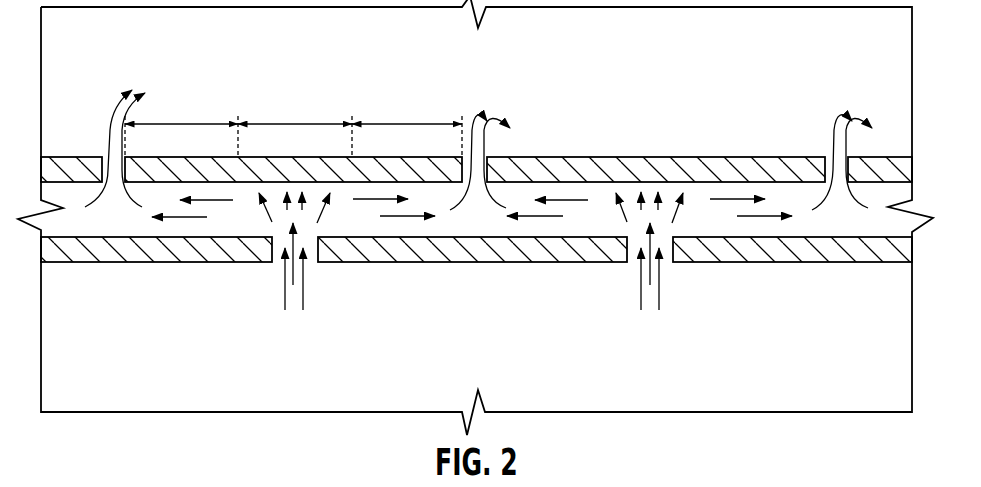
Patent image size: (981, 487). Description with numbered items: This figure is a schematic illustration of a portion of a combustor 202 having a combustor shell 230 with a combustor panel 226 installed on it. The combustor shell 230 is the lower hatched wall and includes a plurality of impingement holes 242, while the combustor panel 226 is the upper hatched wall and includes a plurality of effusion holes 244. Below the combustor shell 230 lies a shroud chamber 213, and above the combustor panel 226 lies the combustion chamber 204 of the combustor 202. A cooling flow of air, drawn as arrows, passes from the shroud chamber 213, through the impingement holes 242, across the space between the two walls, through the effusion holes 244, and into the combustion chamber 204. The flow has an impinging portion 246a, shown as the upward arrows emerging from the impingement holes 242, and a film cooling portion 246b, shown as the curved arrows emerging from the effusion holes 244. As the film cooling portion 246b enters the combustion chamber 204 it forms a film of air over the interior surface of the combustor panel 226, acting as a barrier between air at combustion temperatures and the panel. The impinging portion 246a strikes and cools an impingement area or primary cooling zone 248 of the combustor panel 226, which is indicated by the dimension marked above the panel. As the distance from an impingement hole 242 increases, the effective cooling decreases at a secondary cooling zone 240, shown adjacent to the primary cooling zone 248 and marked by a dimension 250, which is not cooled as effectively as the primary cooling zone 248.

The combustor 202 is at (638, 96).
The combustion chamber 204 is at (497, 64).
The shroud chamber 213 is at (498, 377).
The combustor panel 226 is at (395, 157).
The combustor shell 230 is at (168, 252).
The secondary cooling zone 240 is at (102, 156).
The impingement holes 242 is at (318, 265).
The effusion holes 244 is at (830, 155).
The impinging portion 246a is at (325, 345).
The film cooling portion 246b is at (173, 84).
The primary cooling zone 248 is at (293, 124).
The spacing dimension 250 is at (182, 124).